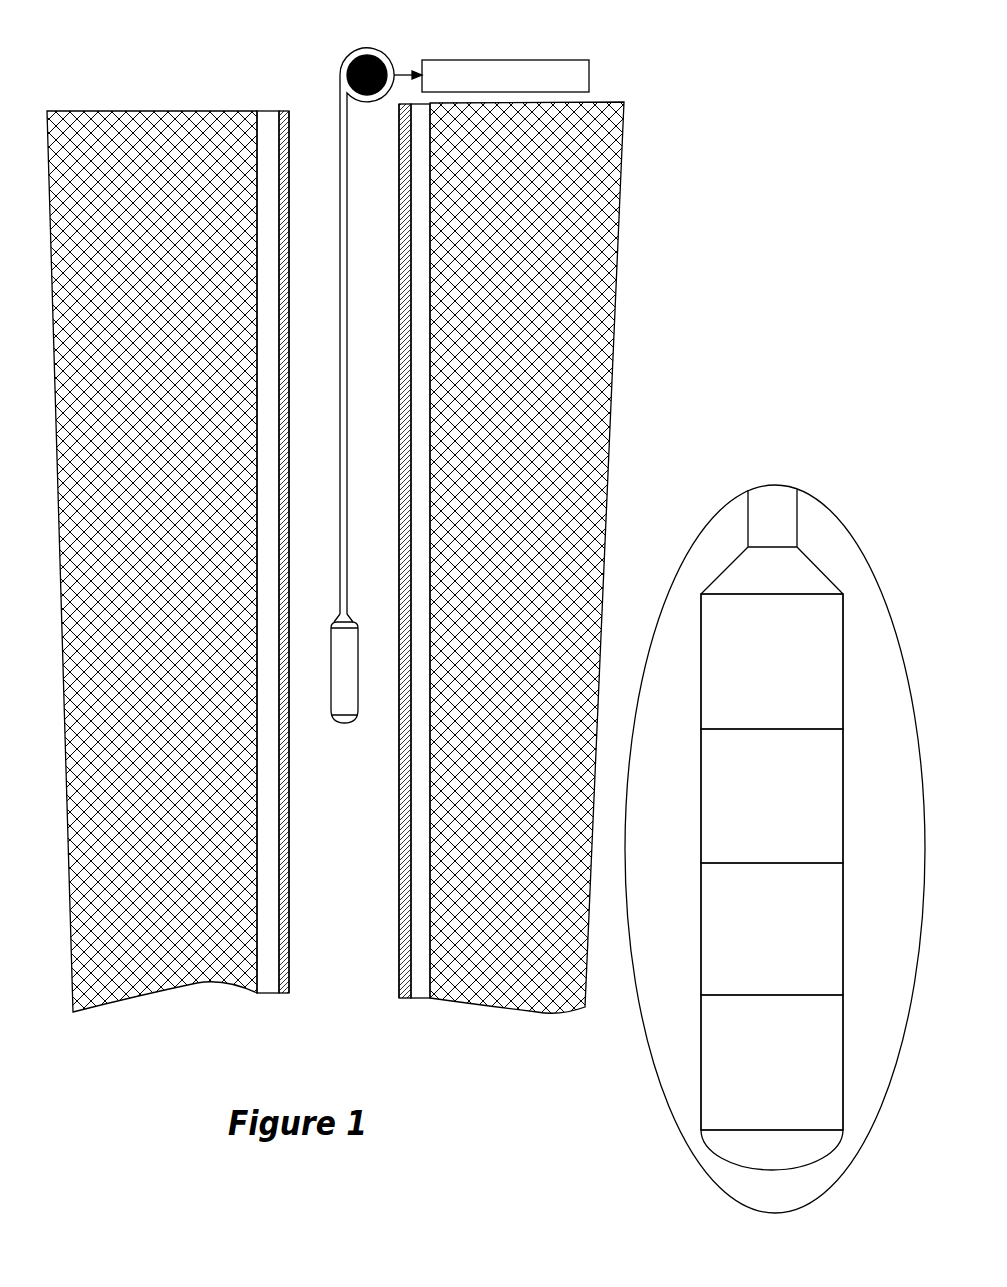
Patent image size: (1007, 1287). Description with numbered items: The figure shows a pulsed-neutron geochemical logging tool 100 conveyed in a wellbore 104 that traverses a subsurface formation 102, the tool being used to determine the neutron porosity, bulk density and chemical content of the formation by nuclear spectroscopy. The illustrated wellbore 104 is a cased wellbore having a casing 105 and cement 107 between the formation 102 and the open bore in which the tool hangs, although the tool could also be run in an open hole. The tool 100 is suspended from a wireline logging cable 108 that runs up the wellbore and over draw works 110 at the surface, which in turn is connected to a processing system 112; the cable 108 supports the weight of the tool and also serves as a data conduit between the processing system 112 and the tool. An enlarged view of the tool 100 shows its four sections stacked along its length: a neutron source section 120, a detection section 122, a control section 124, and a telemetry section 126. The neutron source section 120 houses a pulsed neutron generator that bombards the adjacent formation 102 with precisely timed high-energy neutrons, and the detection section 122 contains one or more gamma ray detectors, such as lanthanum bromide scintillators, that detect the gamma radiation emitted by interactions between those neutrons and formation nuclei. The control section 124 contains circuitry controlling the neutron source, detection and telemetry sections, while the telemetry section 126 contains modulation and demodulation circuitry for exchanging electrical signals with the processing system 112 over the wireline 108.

The pulsed-neutron geochemical logging tool 100 is at (368, 690).
The formation 102 is at (233, 170).
The wellbore 104 is at (327, 104).
The casing 105 is at (400, 998).
The cement 107 is at (268, 995).
The wireline logging cable 108 is at (340, 370).
The draw works 110 is at (373, 50).
The processing system 112 is at (568, 60).
The neutron source section 120 is at (772, 1062).
The detection section 122 is at (772, 929).
The control section 124 is at (772, 796).
The telemetry section 126 is at (772, 661).